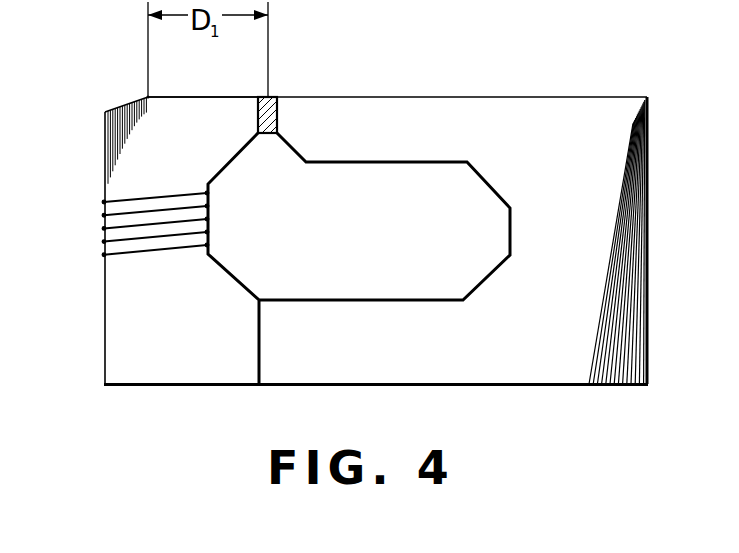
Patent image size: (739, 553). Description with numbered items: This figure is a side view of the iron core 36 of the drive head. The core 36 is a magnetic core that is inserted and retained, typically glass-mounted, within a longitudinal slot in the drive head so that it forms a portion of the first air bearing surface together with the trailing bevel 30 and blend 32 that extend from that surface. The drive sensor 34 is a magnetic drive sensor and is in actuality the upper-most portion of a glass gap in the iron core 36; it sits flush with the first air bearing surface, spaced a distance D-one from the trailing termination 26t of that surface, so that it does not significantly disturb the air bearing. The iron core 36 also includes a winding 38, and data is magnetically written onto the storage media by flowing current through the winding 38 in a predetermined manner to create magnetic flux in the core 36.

The trailing bevel 30 is at (128, 101).
The blend 32 is at (148, 97).
The trailing termination 26t is at (148, 97).
The drive sensor 34 is at (276, 97).
The iron core 36 is at (145, 355).
The winding 38 is at (92, 223).